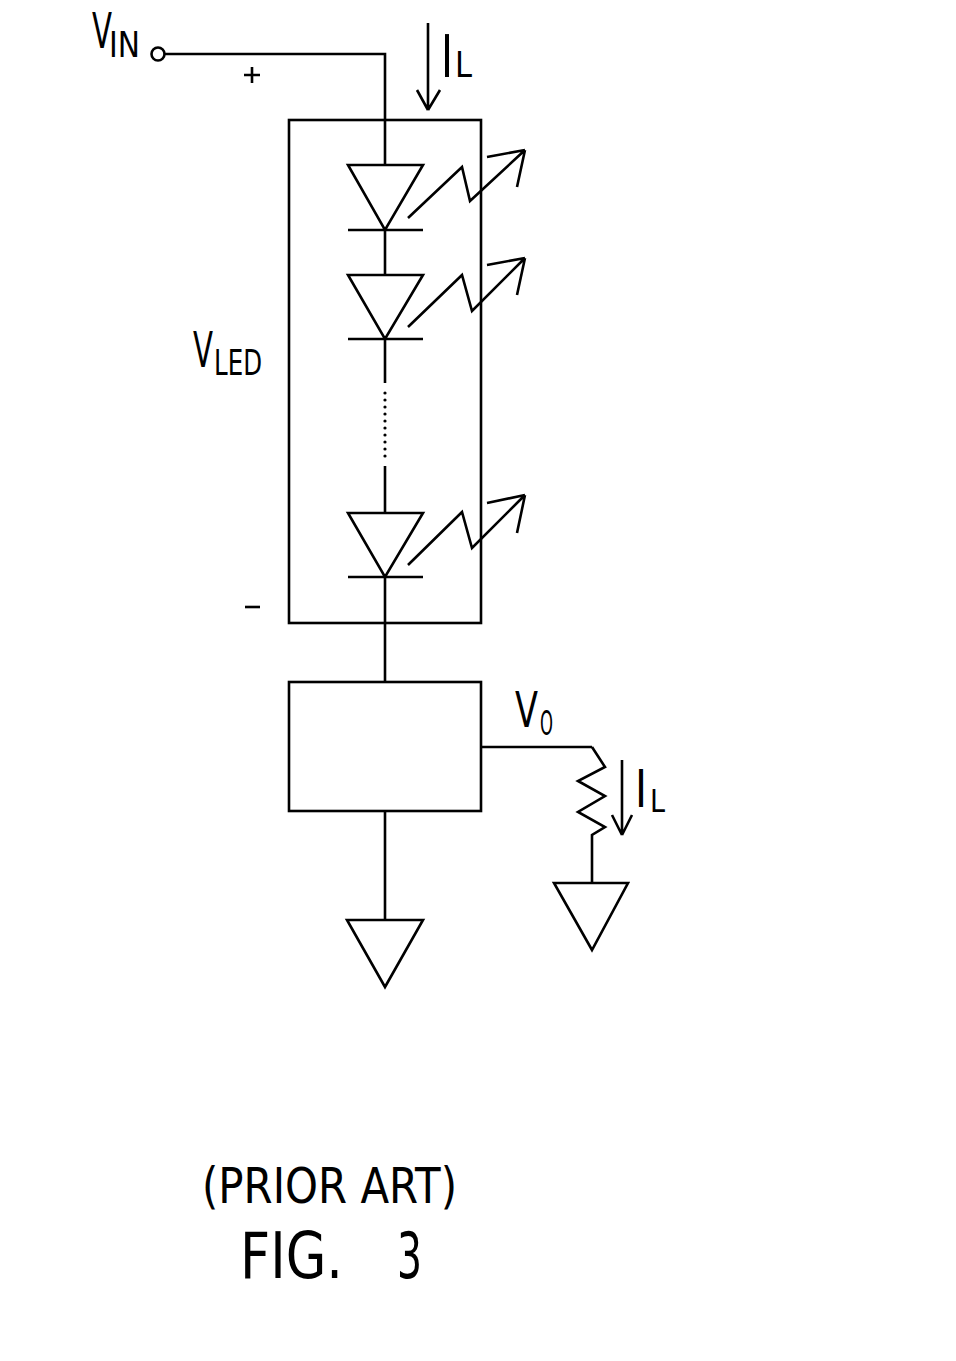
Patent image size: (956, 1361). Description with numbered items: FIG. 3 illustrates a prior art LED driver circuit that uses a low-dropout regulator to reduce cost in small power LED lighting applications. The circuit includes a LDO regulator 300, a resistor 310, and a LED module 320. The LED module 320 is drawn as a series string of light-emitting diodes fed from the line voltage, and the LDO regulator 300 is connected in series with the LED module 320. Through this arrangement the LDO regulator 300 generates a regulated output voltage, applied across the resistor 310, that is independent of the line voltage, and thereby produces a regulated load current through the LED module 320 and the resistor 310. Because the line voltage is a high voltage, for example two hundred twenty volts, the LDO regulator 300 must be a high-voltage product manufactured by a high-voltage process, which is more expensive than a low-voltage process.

The LDO regulator 300 is at (289, 740).
The resistor 310 is at (598, 760).
The LED module 320 is at (481, 380).